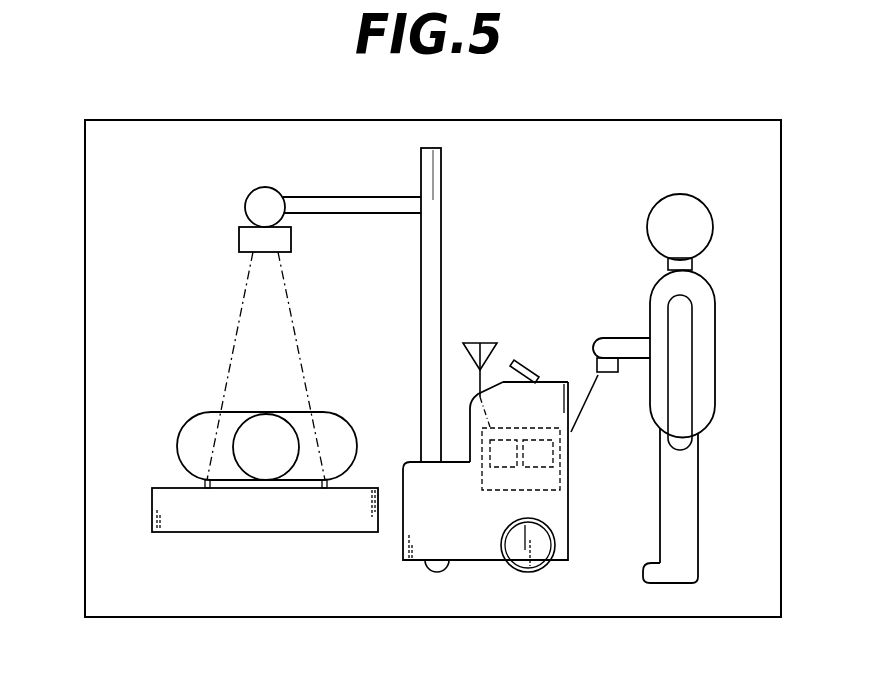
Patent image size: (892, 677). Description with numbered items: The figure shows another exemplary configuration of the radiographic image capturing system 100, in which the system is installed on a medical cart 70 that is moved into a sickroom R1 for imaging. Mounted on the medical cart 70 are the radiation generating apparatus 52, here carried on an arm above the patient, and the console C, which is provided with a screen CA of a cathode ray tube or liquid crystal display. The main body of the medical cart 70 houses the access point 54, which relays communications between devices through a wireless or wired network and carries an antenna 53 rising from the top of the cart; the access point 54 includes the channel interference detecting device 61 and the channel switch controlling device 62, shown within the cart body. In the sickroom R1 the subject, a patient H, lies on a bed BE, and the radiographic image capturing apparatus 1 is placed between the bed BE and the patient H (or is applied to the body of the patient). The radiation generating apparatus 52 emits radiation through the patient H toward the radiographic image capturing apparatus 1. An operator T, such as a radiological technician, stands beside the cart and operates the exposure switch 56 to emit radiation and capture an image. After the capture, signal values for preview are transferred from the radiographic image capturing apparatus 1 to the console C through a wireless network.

The radiation generating apparatus 52 is at (268, 198).
The radiographic image capturing system 100 is at (528, 268).
The sickroom R1 is at (697, 119).
The operator T is at (706, 207).
The exposure switch 56 is at (614, 380).
The access point 54 is at (562, 472).
The channel interference detecting device 61 is at (492, 467).
The channel switch controlling device 62 is at (530, 467).
The medical cart 70 is at (570, 500).
The antenna 53 is at (478, 338).
The console C is at (526, 359).
The screen CA is at (548, 374).
The subject H is at (201, 416).
The bed BE is at (177, 522).
The radiographic image capturing apparatus 1 is at (243, 483).